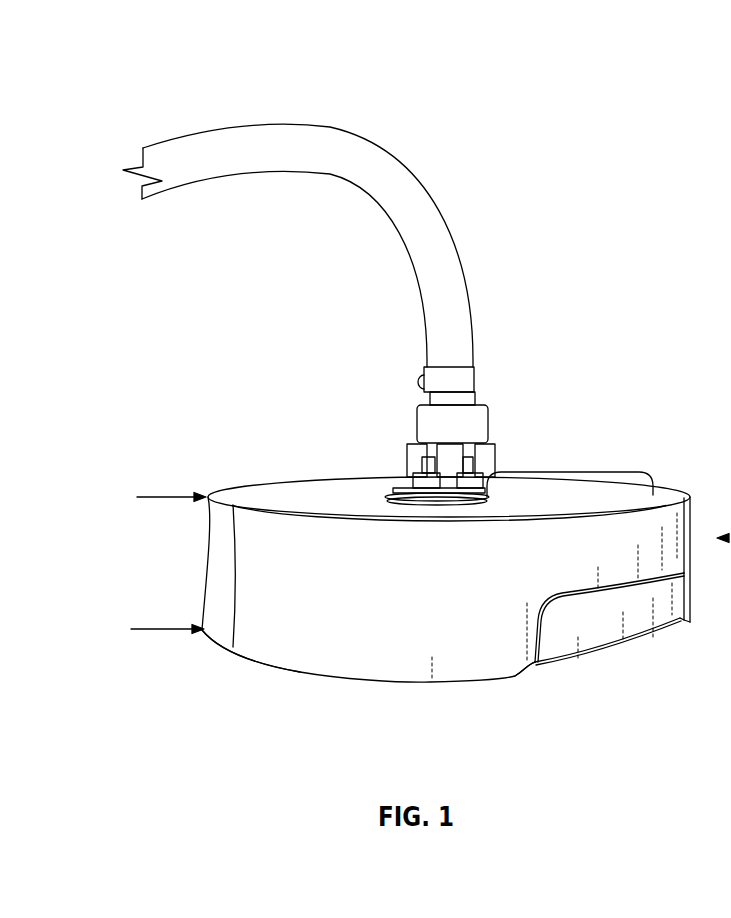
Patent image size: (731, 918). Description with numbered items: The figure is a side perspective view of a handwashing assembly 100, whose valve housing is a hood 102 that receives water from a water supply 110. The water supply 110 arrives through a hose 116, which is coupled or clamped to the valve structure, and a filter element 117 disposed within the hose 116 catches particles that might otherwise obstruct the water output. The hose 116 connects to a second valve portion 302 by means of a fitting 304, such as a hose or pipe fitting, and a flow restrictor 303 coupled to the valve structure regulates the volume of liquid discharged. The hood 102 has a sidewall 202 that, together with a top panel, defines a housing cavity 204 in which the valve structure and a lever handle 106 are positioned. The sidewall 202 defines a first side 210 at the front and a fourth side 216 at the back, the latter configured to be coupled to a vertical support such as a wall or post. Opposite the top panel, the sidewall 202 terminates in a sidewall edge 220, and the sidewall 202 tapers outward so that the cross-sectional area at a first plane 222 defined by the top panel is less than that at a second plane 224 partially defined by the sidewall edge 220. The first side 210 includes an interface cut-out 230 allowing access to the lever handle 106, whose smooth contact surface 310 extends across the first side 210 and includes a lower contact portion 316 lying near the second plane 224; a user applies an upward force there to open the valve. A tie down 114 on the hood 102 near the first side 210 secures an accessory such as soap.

The handwashing assembly 100 is at (280, 381).
The hood 102 is at (308, 488).
The lever handle 106 is at (678, 630).
The water supply 110 is at (160, 148).
The tie down 114 is at (668, 490).
The hose 116 is at (448, 232).
The filter element 117 is at (451, 290).
The sidewall 202 is at (466, 662).
The housing cavity 204 is at (363, 681).
The first side 210 is at (643, 528).
The fourth side 216 is at (225, 548).
The sidewall edge 220 is at (283, 670).
The first plane 222 is at (160, 494).
The second plane 224 is at (155, 630).
The interface cut-out 230 is at (555, 668).
The second valve portion 302 is at (475, 420).
The flow restrictor 303 is at (475, 427).
The fitting 304 is at (475, 378).
The contact surface 310 is at (610, 630).
The lower contact portion 316 is at (610, 655).